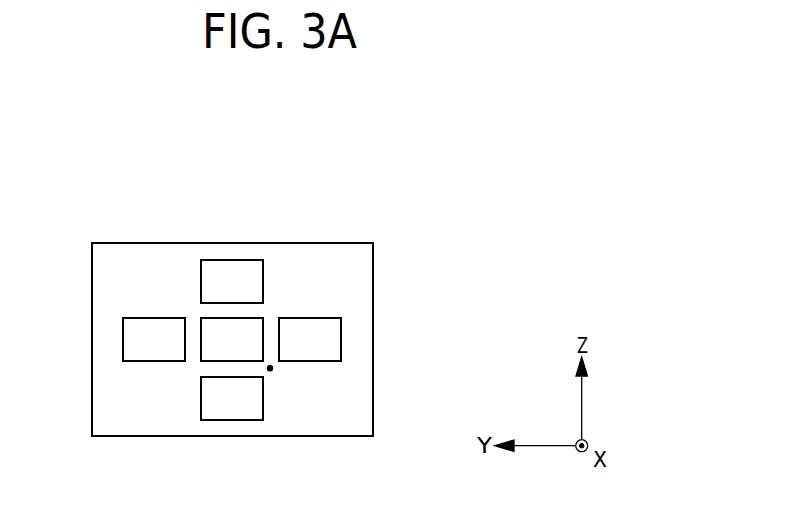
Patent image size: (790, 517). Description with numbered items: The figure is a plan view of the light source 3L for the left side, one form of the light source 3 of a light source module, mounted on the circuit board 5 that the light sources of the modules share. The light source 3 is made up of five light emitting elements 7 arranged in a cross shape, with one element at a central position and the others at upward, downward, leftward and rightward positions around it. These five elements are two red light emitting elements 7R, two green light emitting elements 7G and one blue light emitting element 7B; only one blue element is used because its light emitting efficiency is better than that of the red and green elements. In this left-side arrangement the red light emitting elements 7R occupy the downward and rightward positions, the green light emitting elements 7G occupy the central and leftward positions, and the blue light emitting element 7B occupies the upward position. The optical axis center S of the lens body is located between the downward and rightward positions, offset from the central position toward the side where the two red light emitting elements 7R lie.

The light source for the left side 3L is at (90, 209).
The light source 3 is at (232, 339).
The circuit board 5 is at (92, 417).
The light emitting element 7 is at (232, 340).
The blue light emitting element 7B is at (232, 260).
The green light emitting element 7G is at (143, 318).
The red light emitting element 7R is at (308, 318).
The optical axis center S is at (272, 370).